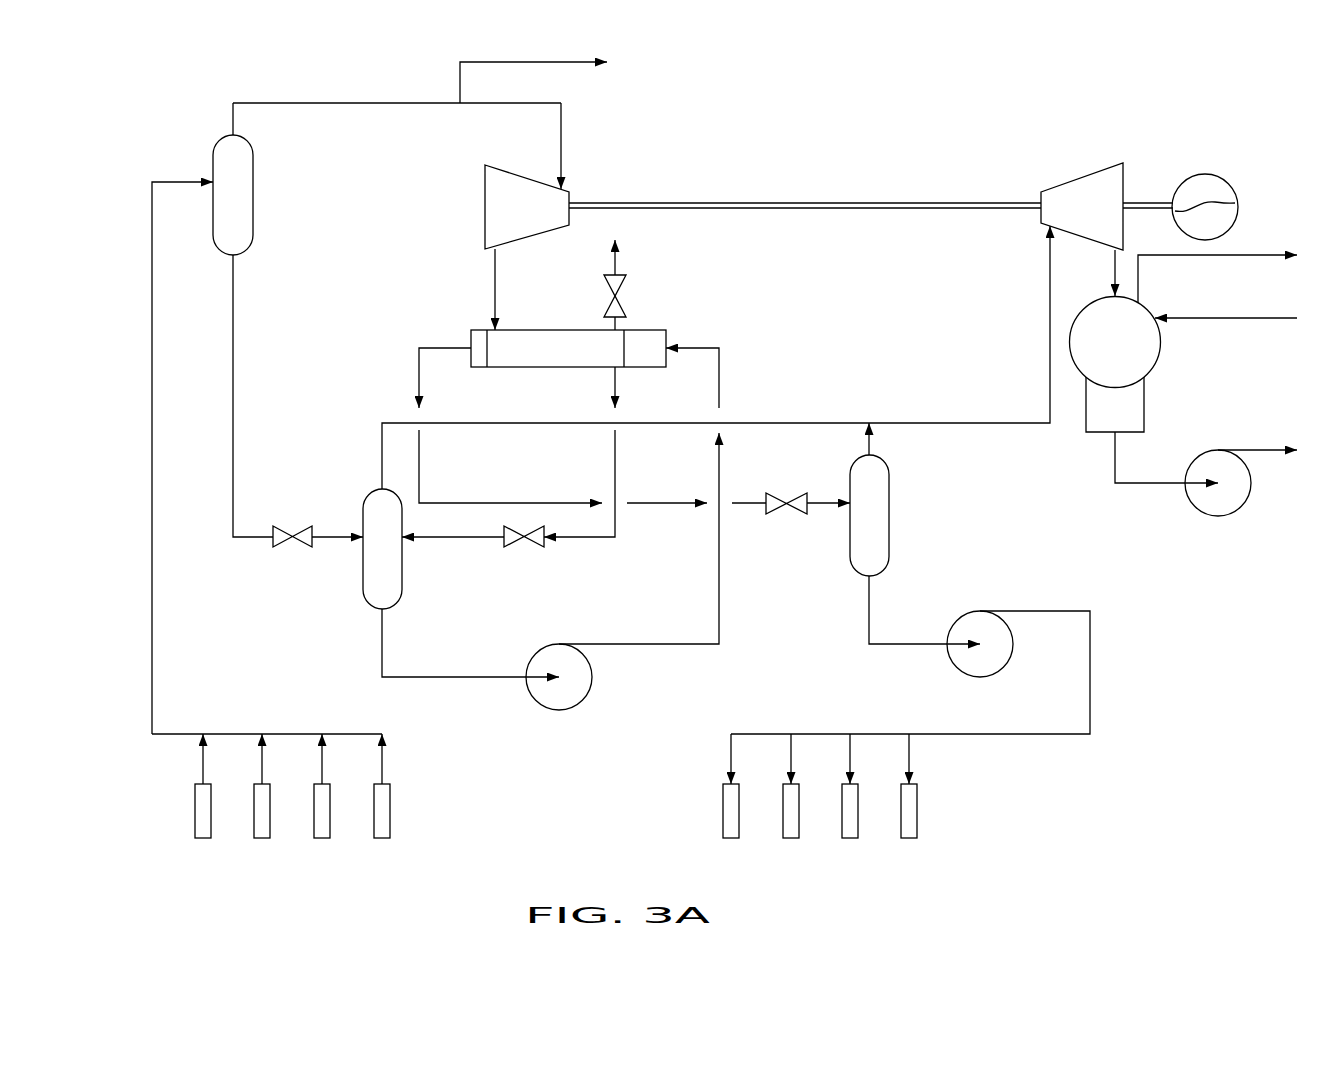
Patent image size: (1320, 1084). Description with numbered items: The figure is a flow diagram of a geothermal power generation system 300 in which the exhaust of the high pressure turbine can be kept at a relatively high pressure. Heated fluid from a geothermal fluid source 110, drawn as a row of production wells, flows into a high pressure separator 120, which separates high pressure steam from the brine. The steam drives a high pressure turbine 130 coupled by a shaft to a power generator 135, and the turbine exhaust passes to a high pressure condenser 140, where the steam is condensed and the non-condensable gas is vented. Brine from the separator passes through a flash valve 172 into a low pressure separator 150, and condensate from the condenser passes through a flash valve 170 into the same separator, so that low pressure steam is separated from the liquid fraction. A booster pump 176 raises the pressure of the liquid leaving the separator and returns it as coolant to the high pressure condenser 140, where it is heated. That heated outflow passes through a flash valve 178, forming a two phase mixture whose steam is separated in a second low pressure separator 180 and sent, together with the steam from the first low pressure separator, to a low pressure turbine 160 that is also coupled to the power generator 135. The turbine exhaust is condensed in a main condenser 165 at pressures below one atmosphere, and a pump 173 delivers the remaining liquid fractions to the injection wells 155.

The geothermal power generation system 300 is at (1160, 98).
The geothermal fluid source 110 is at (182, 812).
The high pressure separator 120 is at (243, 151).
The high pressure turbine 130 is at (502, 182).
The power generator 135 is at (1193, 183).
The high pressure condenser 140 is at (538, 362).
The low pressure separator 150 is at (374, 500).
The injection wells 155 is at (710, 812).
The low pressure turbine 160 is at (1081, 187).
The main condenser 165 is at (1143, 358).
The flash valve 170 is at (512, 542).
The flash valve 172 is at (281, 542).
The pump 173 is at (1223, 506).
The booster pump 176 is at (545, 660).
The flash valve 178 is at (778, 500).
The second low pressure separator 180 is at (880, 475).